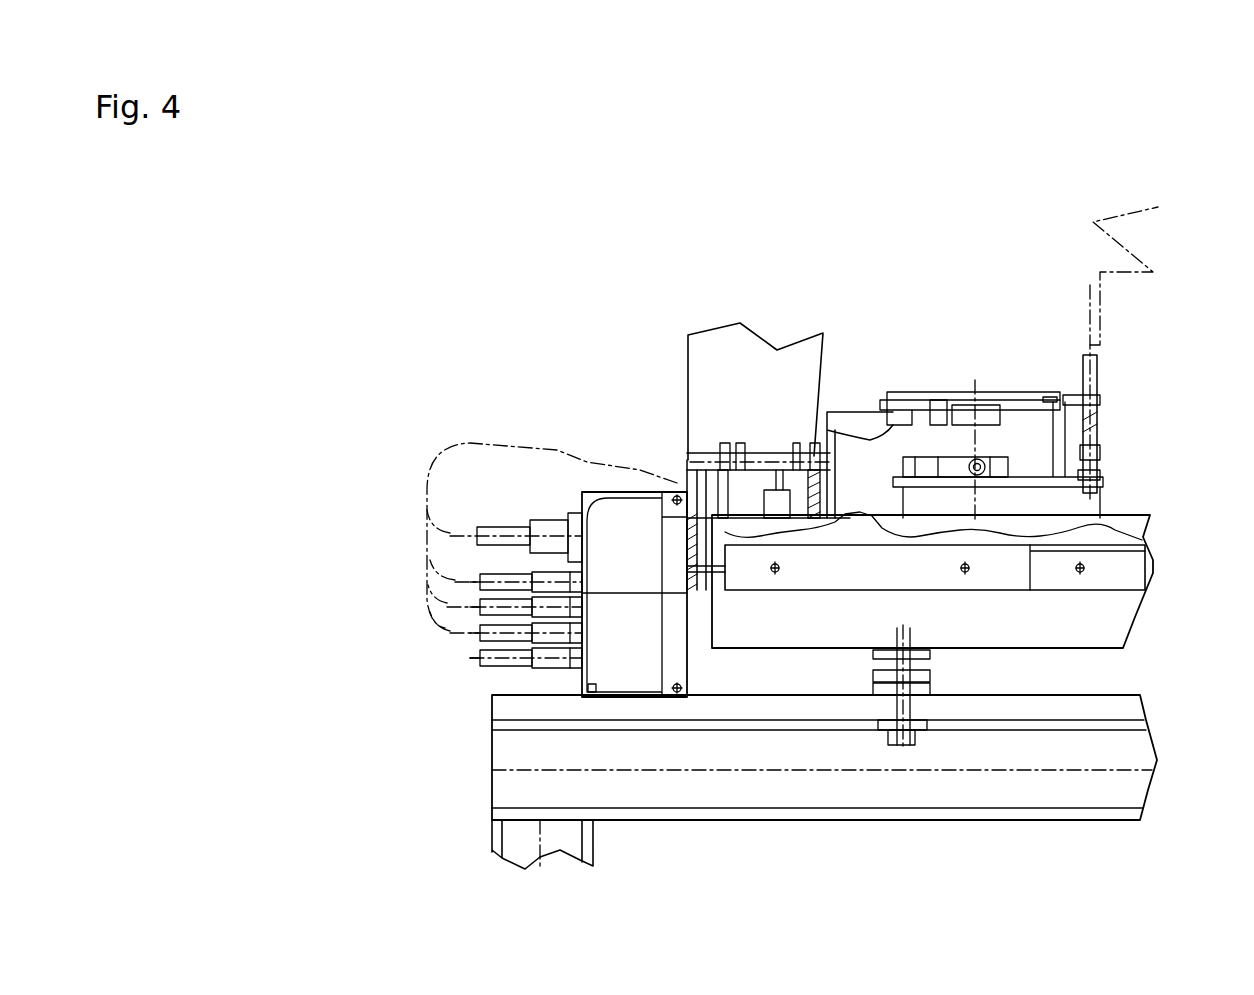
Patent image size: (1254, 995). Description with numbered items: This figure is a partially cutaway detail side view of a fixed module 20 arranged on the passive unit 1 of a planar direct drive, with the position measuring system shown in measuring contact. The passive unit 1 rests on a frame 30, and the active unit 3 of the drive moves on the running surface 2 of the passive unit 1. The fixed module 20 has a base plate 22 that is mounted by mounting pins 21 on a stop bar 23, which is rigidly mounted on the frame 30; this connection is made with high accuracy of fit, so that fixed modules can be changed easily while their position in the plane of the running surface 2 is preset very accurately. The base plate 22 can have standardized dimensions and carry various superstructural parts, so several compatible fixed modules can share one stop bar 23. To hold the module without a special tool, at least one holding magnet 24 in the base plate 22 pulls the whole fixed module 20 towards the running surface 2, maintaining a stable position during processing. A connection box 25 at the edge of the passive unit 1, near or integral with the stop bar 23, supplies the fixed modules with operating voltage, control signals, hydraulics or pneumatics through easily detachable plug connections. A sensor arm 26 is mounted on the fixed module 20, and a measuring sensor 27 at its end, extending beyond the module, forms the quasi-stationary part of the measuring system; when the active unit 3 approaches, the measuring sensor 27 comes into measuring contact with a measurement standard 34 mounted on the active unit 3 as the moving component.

The passive unit 1 is at (1088, 627).
The running surface 2 is at (1127, 553).
The active unit 3 is at (1093, 438).
The fixed module 20 is at (735, 365).
The mounting pins 21 is at (690, 490).
The base plate 22 is at (725, 455).
The stop bar 23 is at (690, 523).
The holding magnet 24 is at (783, 510).
The connection box 25 is at (617, 552).
The sensor arm 26 is at (883, 410).
The measuring sensor 27 is at (977, 393).
The frame 30 is at (532, 708).
The measurement standard 34 is at (1017, 388).